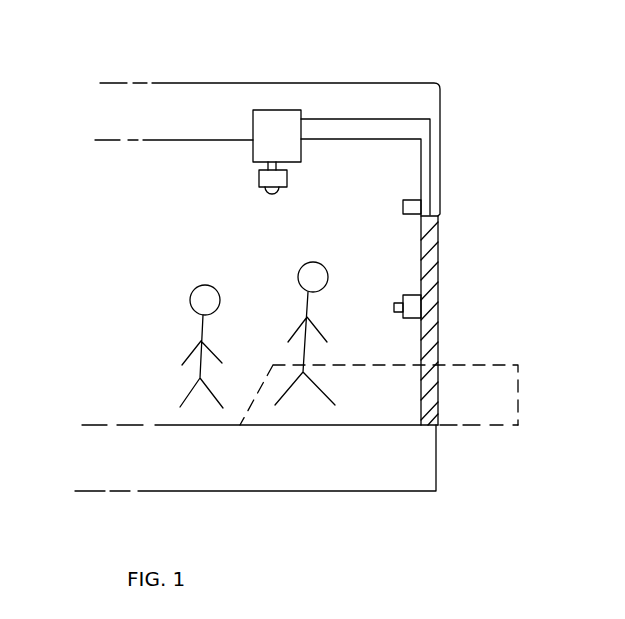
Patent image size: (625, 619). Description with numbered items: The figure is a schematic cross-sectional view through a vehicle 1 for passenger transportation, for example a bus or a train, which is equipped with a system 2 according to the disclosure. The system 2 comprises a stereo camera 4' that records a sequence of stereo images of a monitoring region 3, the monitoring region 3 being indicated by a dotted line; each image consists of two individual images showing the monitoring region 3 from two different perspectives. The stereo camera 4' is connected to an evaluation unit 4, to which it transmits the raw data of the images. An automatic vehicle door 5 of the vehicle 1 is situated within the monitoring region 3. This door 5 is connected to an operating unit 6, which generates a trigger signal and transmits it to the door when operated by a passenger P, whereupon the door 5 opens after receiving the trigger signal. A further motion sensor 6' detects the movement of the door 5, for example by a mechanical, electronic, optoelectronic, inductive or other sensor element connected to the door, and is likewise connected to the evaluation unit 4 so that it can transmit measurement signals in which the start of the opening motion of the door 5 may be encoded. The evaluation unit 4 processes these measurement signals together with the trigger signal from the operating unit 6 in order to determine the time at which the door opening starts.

The vehicle 1 is at (159, 65).
The system 2 is at (227, 183).
The monitoring region 3 is at (482, 385).
The evaluation unit 4 is at (280, 104).
The stereo camera 4' is at (297, 192).
The automatic vehicle door 5 is at (438, 248).
The operating unit 6 is at (399, 287).
The motion sensor 6' is at (401, 187).
The passenger P is at (170, 312).